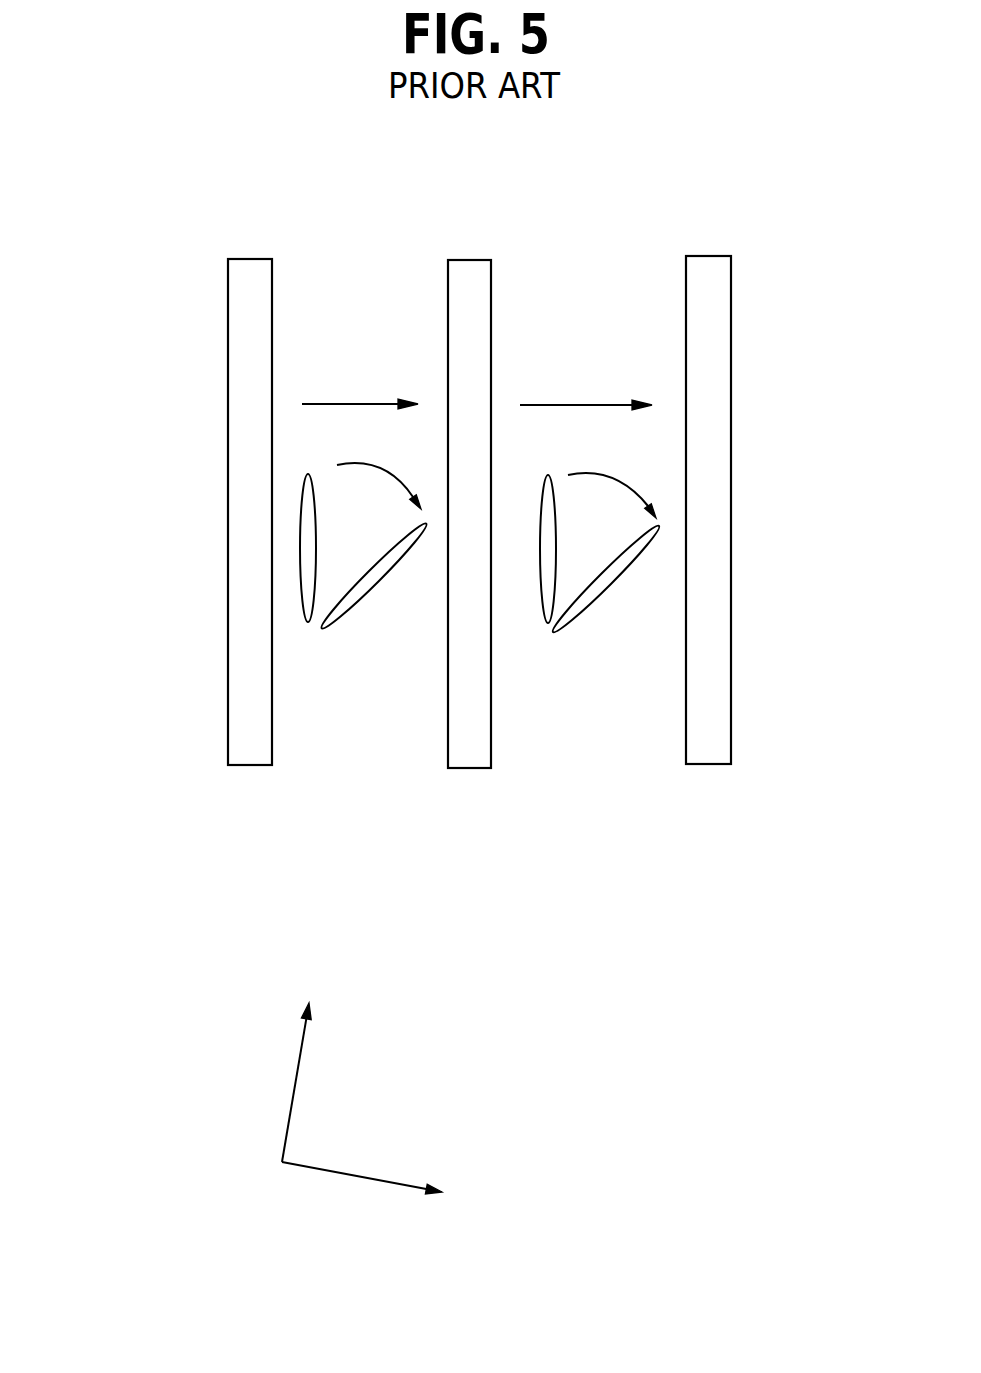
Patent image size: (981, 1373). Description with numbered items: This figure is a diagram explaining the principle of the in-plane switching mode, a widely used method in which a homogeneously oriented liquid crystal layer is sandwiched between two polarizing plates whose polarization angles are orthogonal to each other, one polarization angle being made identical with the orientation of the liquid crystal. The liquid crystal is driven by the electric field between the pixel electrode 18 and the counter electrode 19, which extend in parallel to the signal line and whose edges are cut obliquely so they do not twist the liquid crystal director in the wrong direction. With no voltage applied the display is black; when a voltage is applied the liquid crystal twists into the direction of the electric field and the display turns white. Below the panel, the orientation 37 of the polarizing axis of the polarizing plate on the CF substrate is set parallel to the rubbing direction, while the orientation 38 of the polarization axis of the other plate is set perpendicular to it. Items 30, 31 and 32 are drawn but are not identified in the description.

The pixel electrode 18 is at (468, 759).
The counter electrode 19 is at (248, 750).
The light 30 is at (350, 404).
The liquid crystal molecule (upright state) 31 is at (302, 528).
The liquid crystal molecule (tilted state) 32 is at (358, 600).
The orientation of the polarizing axis 37 is at (293, 1097).
The orientation of the polarization axis 38 is at (325, 1172).